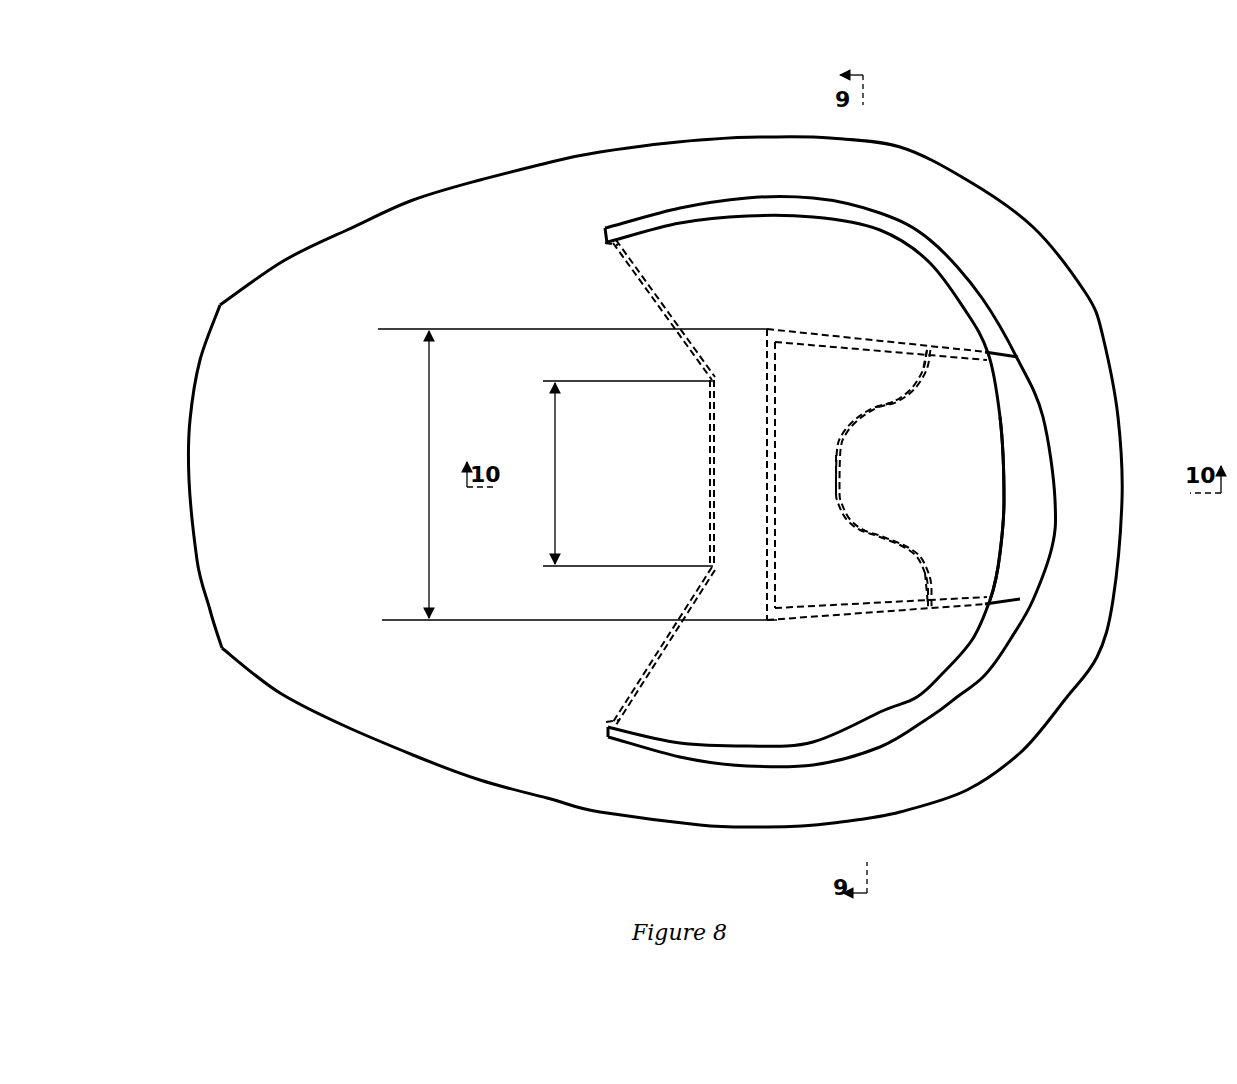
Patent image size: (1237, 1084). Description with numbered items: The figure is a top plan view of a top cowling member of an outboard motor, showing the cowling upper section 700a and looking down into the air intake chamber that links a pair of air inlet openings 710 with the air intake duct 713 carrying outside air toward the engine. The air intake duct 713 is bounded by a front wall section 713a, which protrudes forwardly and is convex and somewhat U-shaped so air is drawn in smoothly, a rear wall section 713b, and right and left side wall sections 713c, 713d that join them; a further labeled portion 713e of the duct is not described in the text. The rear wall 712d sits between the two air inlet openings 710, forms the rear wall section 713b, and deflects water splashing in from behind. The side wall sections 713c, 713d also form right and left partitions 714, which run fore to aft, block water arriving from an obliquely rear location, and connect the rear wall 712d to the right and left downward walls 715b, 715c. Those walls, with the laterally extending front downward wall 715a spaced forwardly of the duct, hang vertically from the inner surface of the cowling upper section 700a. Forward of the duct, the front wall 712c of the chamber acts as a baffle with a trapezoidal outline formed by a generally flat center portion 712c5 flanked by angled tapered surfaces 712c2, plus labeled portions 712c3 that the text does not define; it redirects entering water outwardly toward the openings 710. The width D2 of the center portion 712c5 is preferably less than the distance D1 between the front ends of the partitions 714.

The cowling upper section 700a is at (983, 463).
The air inlet openings 710 is at (933, 263).
The front wall 712c is at (633, 447).
The tapered surfaces 712c2 is at (647, 285).
The end of insert portion 712c3 is at (606, 238).
The center portion 712c5 is at (716, 483).
The rear wall 712d is at (1028, 553).
The air intake duct 713 is at (843, 427).
The front wall section 713a is at (835, 500).
The rear wall section 713b is at (996, 464).
The right side wall section 713c is at (952, 595).
The left side wall section 713d is at (952, 363).
The bend of curved member 713e is at (873, 447).
The partitions 714 is at (963, 347).
The front downward wall 715a is at (770, 537).
The right downward wall 715b is at (833, 620).
The left downward wall 715c is at (823, 333).
The distance between front ends of the partitions D1 is at (577, 474).
The width of the center portion D2 is at (616, 473).